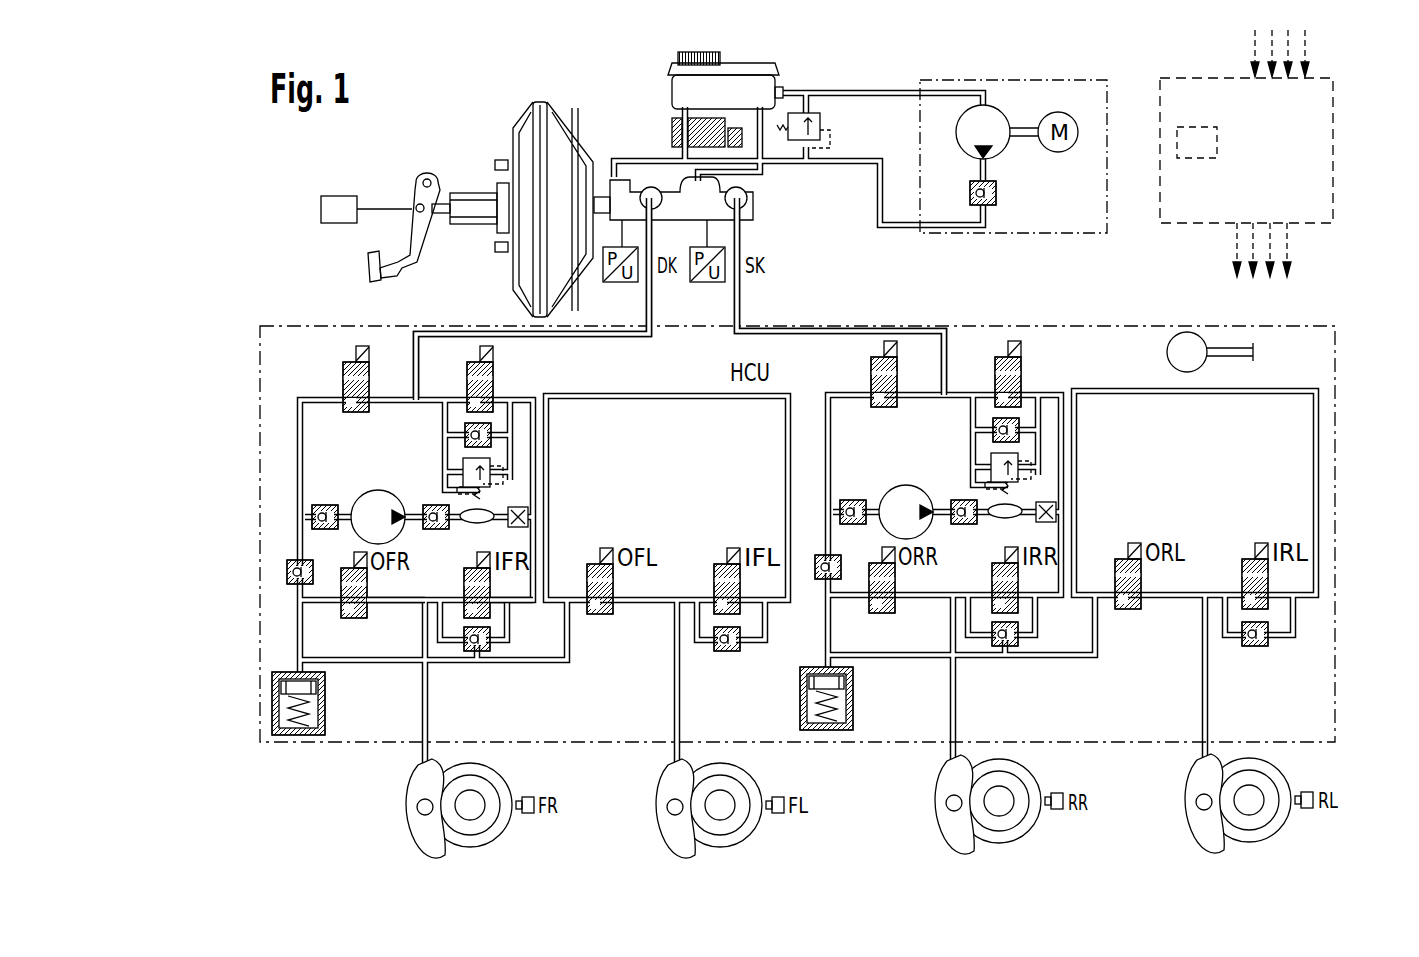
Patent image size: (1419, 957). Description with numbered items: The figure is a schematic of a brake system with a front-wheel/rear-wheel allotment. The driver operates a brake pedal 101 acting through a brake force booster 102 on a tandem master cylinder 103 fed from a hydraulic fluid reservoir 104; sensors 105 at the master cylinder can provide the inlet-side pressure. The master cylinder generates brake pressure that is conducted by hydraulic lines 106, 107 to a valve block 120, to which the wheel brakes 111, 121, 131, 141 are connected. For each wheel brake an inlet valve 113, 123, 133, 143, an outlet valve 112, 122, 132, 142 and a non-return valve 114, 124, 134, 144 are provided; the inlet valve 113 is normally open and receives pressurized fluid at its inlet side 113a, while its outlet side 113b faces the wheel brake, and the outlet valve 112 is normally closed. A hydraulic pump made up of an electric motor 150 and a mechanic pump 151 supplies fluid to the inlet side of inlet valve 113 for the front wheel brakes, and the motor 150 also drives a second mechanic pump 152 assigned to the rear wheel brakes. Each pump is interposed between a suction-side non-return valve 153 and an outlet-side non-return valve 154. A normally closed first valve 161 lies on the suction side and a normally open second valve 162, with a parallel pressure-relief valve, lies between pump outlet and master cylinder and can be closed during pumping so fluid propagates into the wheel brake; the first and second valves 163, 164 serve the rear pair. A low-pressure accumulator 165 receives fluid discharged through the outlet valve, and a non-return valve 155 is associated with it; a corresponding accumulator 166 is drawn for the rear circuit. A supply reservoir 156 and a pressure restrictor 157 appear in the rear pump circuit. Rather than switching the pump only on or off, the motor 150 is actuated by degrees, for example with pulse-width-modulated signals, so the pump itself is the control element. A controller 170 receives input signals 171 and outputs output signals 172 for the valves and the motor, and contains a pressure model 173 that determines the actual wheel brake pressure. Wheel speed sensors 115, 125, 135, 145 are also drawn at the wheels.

The brake pedal 101 is at (405, 232).
The brake force booster 102 is at (553, 128).
The brake cylinder (tandem master cylinder) 103 is at (618, 192).
The hydraulic fluid reservoir 104 is at (760, 72).
The sensors 105 is at (633, 312).
The hydraulic line 106 is at (658, 307).
The hydraulic line 107 is at (745, 305).
The wheel brake 111 is at (437, 838).
The outlet valve 112 is at (342, 590).
The inlet valve 113 is at (463, 580).
The inlet side of the inlet valve 113a is at (512, 598).
The outlet side of the inlet valve 113b is at (420, 596).
The non-return valve 114 is at (482, 652).
The front right wheel speed sensor 115 is at (528, 797).
The valve block 120 is at (1337, 360).
The wheel brake 121 is at (690, 838).
The outlet valve 122 is at (598, 562).
The inlet valve 123 is at (722, 562).
The non-return valve 124 is at (731, 652).
The front left wheel speed sensor 125 is at (778, 797).
The wheel brake 131 is at (968, 836).
The outlet valve 132 is at (882, 606).
The inlet valve 133 is at (992, 582).
The non-return valve 134 is at (1006, 648).
The rear right wheel speed sensor 135 is at (1057, 793).
The wheel brake 141 is at (1220, 834).
The outlet valve 142 is at (1120, 560).
The inlet valve 143 is at (1243, 560).
The non-return valve 144 is at (1254, 648).
The rear left wheel speed sensor 145 is at (1308, 790).
The electric motor 150 is at (1167, 351).
The mechanic part of the pump 151 is at (365, 515).
The mechanic pump 152 is at (892, 510).
The suction-side non-return valve 153 is at (318, 512).
The outlet-side non-return valve 154 is at (432, 510).
The non-return valve 155 is at (290, 572).
The supply reservoir 156 is at (962, 508).
The pressure restrictor 157 is at (1055, 505).
The first valve 161 is at (344, 380).
The second valve 162 is at (494, 385).
The first valve 163 is at (872, 378).
The second valve 164 is at (1021, 378).
The low-pressure accumulator 165 is at (272, 712).
The accumulator 166 is at (854, 712).
The controller 170 is at (1334, 130).
The input signals 171 is at (1322, 47).
The output signals 172 is at (1307, 242).
The pressure model 173 is at (1217, 145).